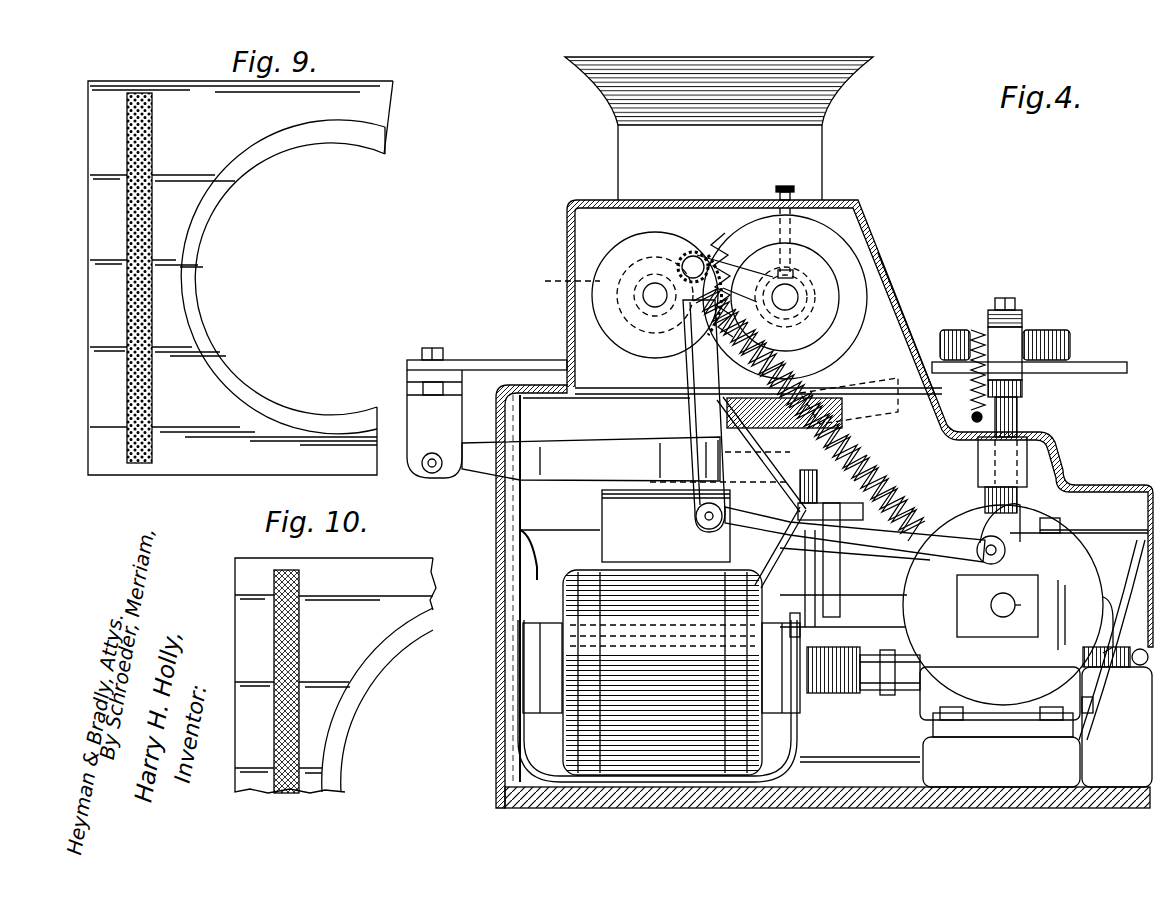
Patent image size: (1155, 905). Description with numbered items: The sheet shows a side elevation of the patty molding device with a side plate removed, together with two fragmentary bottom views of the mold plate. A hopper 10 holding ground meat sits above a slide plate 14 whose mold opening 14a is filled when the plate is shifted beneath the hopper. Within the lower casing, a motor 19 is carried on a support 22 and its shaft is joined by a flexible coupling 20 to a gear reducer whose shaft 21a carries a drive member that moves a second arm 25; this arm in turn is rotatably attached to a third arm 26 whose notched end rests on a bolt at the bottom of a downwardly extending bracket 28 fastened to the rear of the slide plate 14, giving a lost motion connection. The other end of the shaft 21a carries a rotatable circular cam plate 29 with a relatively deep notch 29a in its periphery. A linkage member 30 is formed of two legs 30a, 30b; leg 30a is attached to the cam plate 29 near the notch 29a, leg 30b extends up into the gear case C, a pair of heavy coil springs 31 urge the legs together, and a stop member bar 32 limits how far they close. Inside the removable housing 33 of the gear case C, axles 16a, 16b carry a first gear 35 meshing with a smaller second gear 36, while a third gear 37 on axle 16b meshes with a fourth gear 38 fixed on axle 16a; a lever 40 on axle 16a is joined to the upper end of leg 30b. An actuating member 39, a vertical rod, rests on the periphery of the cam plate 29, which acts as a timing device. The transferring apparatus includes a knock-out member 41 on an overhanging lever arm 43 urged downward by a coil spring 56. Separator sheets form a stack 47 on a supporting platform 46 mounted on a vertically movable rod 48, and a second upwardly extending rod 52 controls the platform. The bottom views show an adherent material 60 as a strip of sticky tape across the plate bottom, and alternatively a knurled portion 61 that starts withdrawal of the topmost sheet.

In FIG. 4, the hopper 10 is at (800, 114).
In FIG. 4, the gear case C is at (885, 252).
In FIG. 4, the removable housing 33 is at (903, 323).
In FIG. 4, the first gear 35 is at (838, 235).
In FIG. 4, the second gear 36 is at (598, 318).
In FIG. 4, the third gear 37 is at (596, 330).
In FIG. 4, the fourth gear 38 is at (853, 300).
In FIG. 4, the axle 16a is at (787, 293).
In FIG. 4, the axle 16b is at (653, 290).
In FIG. 4, the lever 40 is at (732, 242).
In FIG. 4, the coil springs 31 is at (890, 472).
In FIG. 4, the leg 30b is at (693, 410).
In FIG. 4, the stop member bar 32 is at (715, 446).
In FIG. 4, the third arm 26 is at (575, 455).
In FIG. 4, the downwardly extending bracket 28 is at (460, 412).
In FIG. 4, the second arm 25 is at (740, 546).
In FIG. 4, the linkage member 30 is at (861, 553).
In FIG. 4, the leg 30a is at (895, 543).
In FIG. 4, the supporting platform 46 is at (878, 420).
In FIG. 4, the stack 47 is at (746, 440).
In FIG. 4, the vertically movable rod 48 is at (840, 602).
In FIG. 4, the second upwardly extending rod 52 is at (800, 562).
In FIG. 4, the coil spring 56 is at (975, 390).
In FIG. 4, the overhanging lever arm 43 is at (1003, 345).
In FIG. 4, the knock-out member 41 is at (1060, 347).
In FIG. 4, the actuating member 39 is at (1010, 413).
In FIG. 9, the slide plate 14 is at (365, 124).
In FIG. 10, the slide plate 14 is at (390, 578).
In FIG. 4, the slide plate 14 is at (1093, 374).
In FIG. 9, the mold opening 14a is at (370, 152).
In FIG. 10, the mold opening 14a is at (380, 670).
In FIG. 4, the rotatable circular cam plate 29 is at (1087, 574).
In FIG. 4, the notch 29a is at (1005, 514).
In FIG. 4, the gear reducer shaft 21a is at (1003, 614).
In FIG. 4, the flexible coupling 20 is at (841, 692).
In FIG. 4, the support 22 is at (868, 764).
In FIG. 4, the motor 19 is at (660, 656).
In FIG. 9, the adherent material 60 is at (139, 108).
In FIG. 10, the knurled portion 61 is at (278, 590).